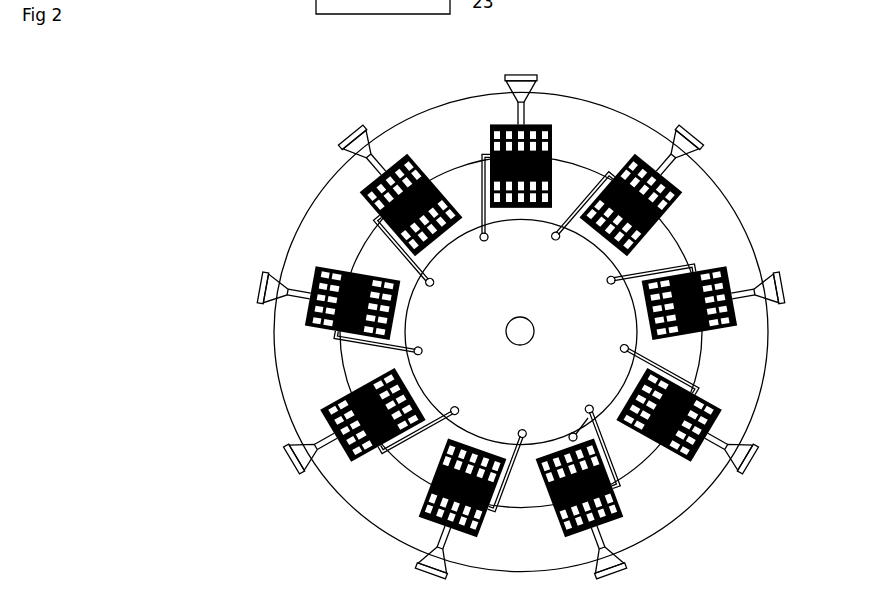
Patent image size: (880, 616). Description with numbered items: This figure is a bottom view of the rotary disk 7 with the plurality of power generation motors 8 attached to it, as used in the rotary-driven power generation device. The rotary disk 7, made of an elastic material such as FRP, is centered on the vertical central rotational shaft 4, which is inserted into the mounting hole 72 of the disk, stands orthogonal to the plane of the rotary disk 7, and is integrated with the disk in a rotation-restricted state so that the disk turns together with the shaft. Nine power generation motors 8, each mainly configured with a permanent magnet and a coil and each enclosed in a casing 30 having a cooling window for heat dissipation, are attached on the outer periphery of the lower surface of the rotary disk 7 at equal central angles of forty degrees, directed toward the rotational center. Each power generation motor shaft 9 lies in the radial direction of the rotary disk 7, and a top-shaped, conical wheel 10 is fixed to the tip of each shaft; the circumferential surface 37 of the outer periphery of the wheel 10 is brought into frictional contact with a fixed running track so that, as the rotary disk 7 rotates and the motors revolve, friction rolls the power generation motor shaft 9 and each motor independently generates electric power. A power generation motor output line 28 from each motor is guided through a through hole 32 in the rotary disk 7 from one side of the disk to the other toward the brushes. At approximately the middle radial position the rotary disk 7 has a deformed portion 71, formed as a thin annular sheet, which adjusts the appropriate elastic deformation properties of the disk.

The central rotational shaft 4 is at (516, 326).
The rotary disk 7 is at (748, 364).
The power generation motor 8 is at (375, 198).
The power generation motor shaft 9 is at (527, 110).
The top-shaped wheel 10 is at (504, 84).
The power generation motor output line 28 is at (420, 263).
The casing 30 is at (493, 137).
The through hole 32 is at (490, 246).
The circumferential surface 37 is at (351, 126).
The deformed portion 71 is at (571, 434).
The mounting hole 72 is at (536, 337).